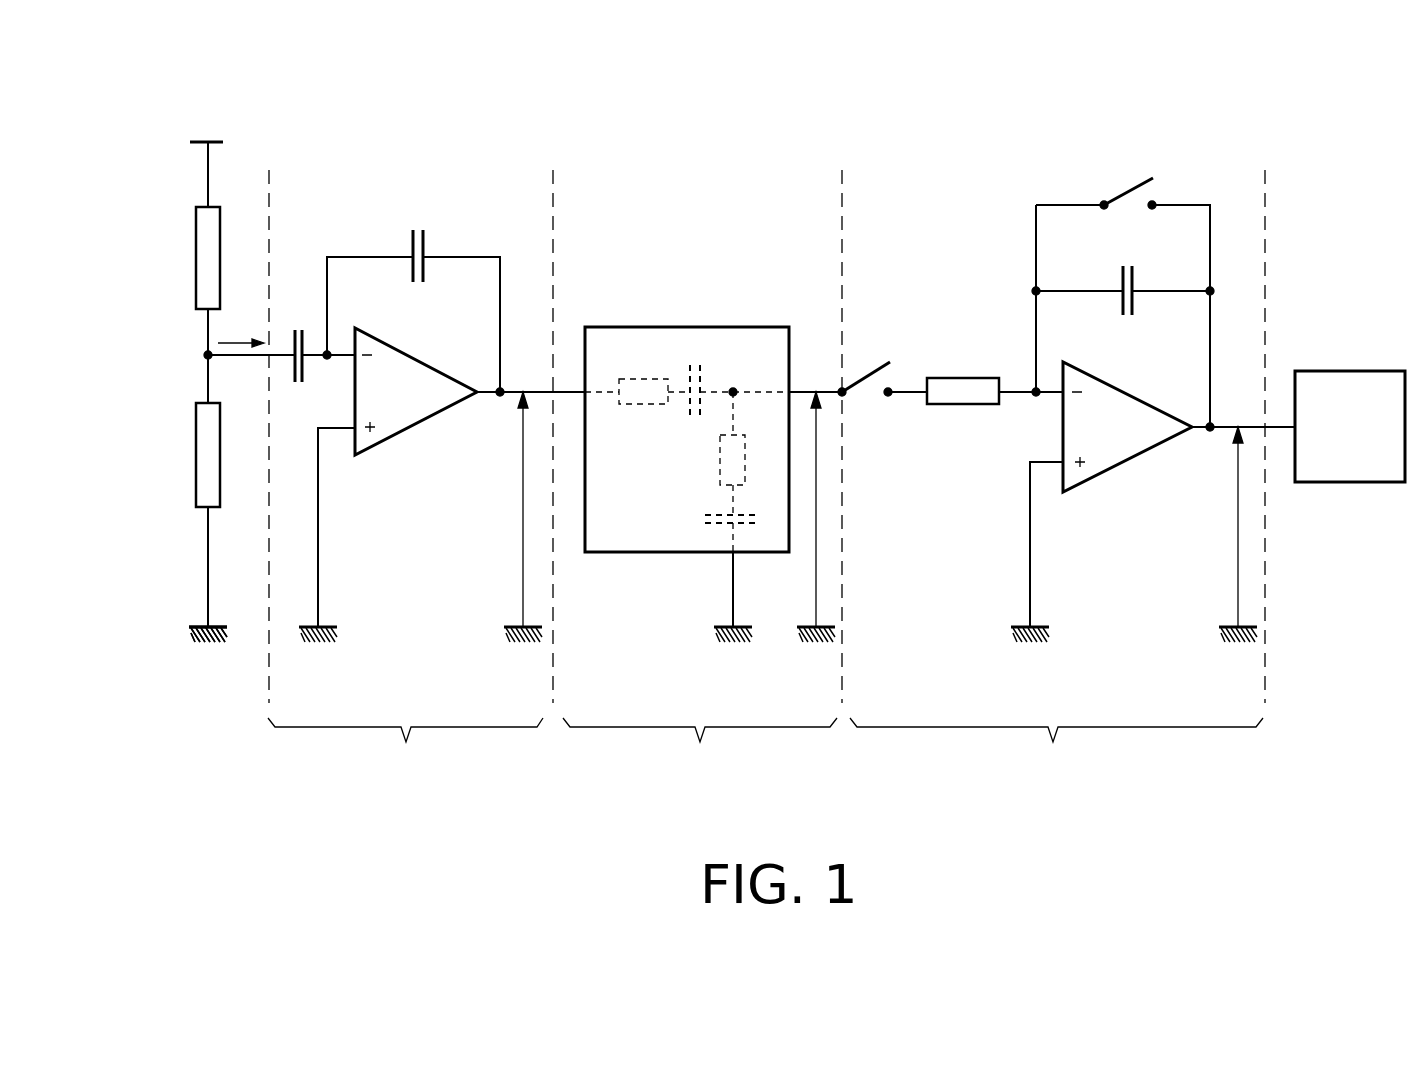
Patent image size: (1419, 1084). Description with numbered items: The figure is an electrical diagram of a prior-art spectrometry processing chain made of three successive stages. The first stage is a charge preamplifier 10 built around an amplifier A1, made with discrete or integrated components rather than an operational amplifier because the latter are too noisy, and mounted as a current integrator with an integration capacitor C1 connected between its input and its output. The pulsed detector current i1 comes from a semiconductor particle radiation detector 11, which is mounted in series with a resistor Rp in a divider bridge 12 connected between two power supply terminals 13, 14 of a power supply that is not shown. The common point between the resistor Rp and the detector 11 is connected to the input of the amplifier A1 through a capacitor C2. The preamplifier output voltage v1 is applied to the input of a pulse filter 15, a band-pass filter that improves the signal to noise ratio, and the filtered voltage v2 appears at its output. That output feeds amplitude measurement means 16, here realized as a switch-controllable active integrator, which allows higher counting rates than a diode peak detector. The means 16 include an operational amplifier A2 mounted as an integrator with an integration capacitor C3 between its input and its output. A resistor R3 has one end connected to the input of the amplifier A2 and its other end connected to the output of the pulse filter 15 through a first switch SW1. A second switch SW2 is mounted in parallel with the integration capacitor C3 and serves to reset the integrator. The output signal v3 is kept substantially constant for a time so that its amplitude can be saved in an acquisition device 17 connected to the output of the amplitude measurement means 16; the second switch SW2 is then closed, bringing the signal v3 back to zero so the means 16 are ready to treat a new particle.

The charge preamplifier 10 is at (405, 749).
The semiconductor particle radiation detector 11 is at (200, 485).
The divider bridge 12 is at (198, 326).
The power supply terminal 13 is at (224, 141).
The power supply terminal 14 is at (200, 640).
The pulse filter 15 is at (700, 553).
The amplitude measurement means 16 is at (1056, 749).
The acquisition device 17 is at (1350, 375).
The resistor Rp is at (203, 228).
The detector current i1 is at (241, 333).
The integration capacitor C1 is at (427, 243).
The capacitor C2 is at (296, 333).
The integration capacitor C3 is at (1135, 302).
The amplifier A1 is at (407, 428).
The operational amplifier A2 is at (1118, 450).
The voltage v1 is at (511, 509).
The voltage v2 is at (803, 509).
The signal v3 is at (1224, 527).
The first switch SW1 is at (870, 368).
The second switch SW2 is at (1127, 192).
The resistor R3 is at (980, 385).